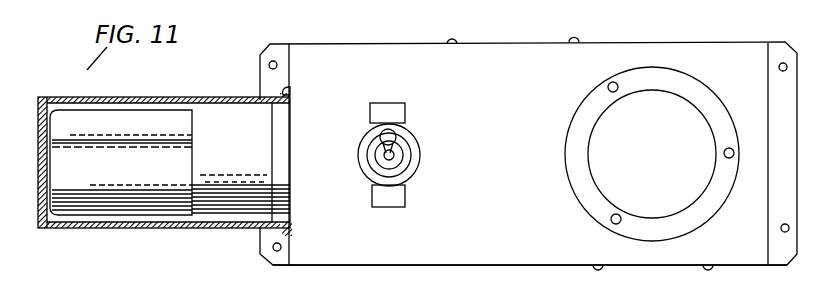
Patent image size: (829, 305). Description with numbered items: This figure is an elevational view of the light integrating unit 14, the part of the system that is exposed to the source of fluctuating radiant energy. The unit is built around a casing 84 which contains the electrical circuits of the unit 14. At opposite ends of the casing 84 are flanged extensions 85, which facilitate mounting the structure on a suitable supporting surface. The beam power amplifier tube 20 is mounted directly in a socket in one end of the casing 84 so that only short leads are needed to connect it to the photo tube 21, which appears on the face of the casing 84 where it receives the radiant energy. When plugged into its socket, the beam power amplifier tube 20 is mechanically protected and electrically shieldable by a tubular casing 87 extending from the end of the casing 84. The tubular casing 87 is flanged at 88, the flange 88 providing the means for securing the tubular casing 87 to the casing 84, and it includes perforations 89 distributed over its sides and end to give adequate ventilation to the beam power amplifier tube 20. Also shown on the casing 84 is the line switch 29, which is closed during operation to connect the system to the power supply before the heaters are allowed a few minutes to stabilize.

The light integrating unit 14 is at (505, 42).
The beam power amplifier tube 20 is at (125, 203).
The photo tube 21 is at (610, 123).
The line switch 29 is at (403, 148).
The casing 84 is at (529, 243).
The flanged extensions 85 is at (262, 232).
The tubular casing 87 is at (203, 225).
The flange 88 is at (288, 92).
The perforations 89 is at (142, 100).